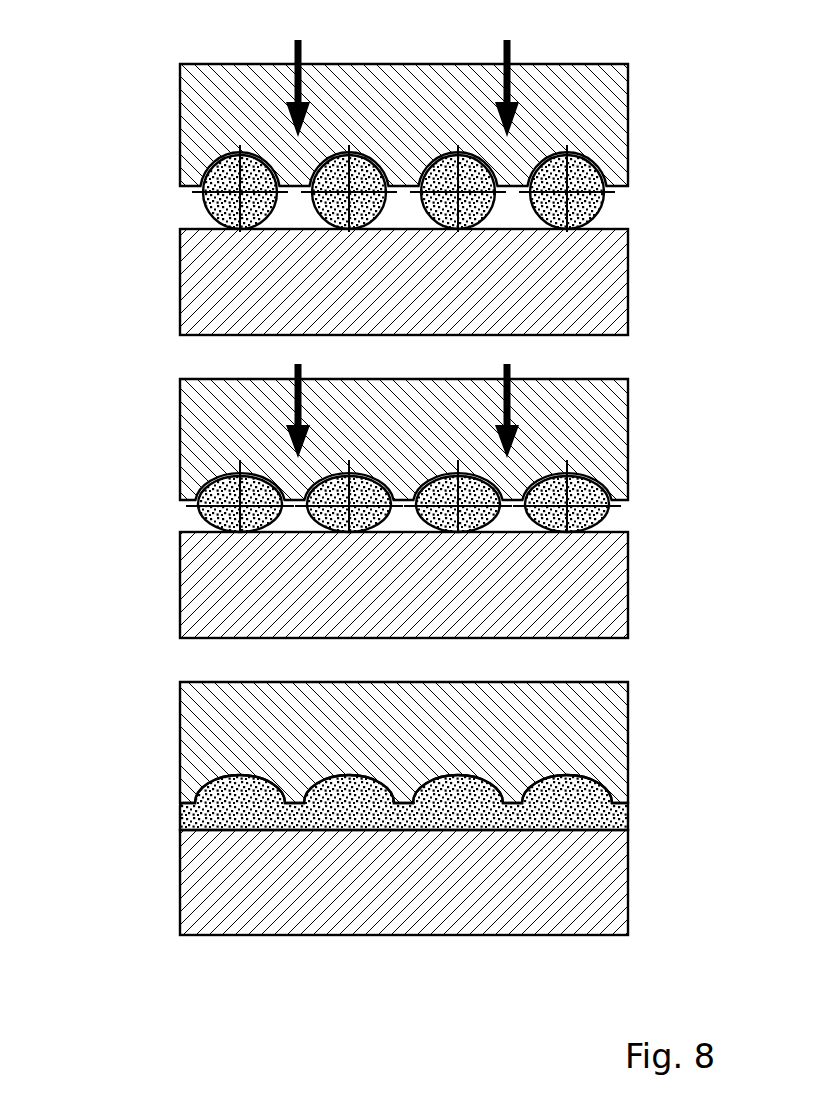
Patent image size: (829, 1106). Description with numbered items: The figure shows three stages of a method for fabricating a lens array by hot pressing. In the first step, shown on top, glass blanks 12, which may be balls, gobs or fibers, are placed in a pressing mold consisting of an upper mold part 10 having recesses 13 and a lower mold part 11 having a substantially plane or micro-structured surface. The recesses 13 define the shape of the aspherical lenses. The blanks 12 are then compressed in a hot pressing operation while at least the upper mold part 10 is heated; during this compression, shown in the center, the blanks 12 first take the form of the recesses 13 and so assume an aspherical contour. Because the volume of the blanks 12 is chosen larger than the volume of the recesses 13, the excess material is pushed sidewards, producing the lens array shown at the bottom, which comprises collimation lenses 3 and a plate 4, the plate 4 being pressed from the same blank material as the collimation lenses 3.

The upper mold part 10 is at (195, 115).
The lower mold part 11 is at (197, 303).
The blanks 12 is at (597, 194).
The recesses 13 is at (200, 183).
The collimation lenses 3 is at (577, 785).
The plate 4 is at (625, 817).